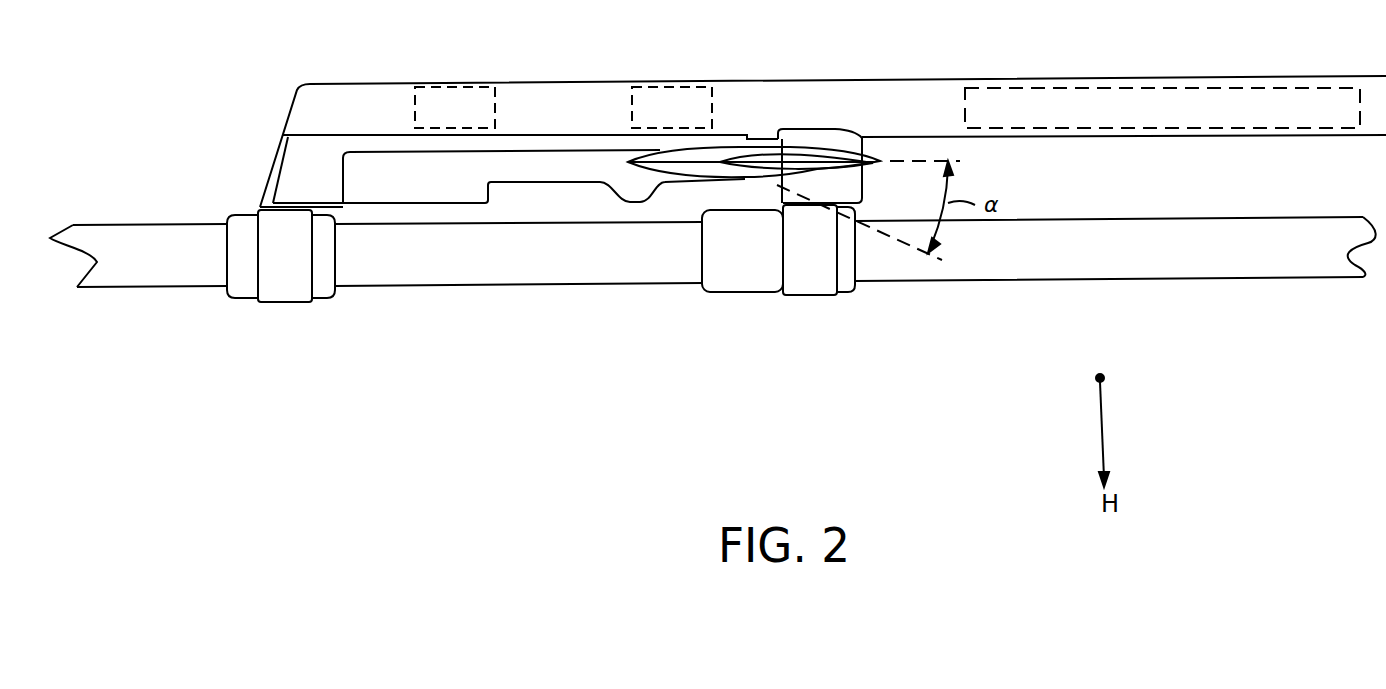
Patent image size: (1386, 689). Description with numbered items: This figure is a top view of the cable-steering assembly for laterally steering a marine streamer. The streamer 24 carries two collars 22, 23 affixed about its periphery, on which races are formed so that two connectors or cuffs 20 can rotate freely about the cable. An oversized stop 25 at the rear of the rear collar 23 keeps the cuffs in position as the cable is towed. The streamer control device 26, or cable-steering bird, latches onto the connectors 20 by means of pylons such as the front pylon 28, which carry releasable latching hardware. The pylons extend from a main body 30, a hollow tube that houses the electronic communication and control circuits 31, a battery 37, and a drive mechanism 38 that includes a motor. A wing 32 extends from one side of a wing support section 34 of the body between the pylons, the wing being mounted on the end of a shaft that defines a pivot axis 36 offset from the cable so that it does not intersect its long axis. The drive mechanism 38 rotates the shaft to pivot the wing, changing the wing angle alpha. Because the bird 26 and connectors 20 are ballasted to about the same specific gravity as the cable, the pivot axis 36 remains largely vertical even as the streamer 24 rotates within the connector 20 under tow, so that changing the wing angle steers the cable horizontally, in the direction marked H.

The connector 20 is at (287, 290).
The collar 22 is at (243, 290).
The rear collar 23 is at (727, 282).
The streamer 24 is at (1278, 267).
The oversized stop 25 is at (850, 290).
The streamer control device 26 is at (925, 124).
The front pylon 28 is at (292, 180).
The main body 30 is at (847, 95).
The electronic communication and control circuits 31 is at (442, 95).
The wing 32 is at (715, 162).
The wing support section 34 is at (463, 195).
The pivot axis 36 is at (717, 163).
The battery 37 is at (1084, 94).
The drive mechanism 38 is at (655, 93).